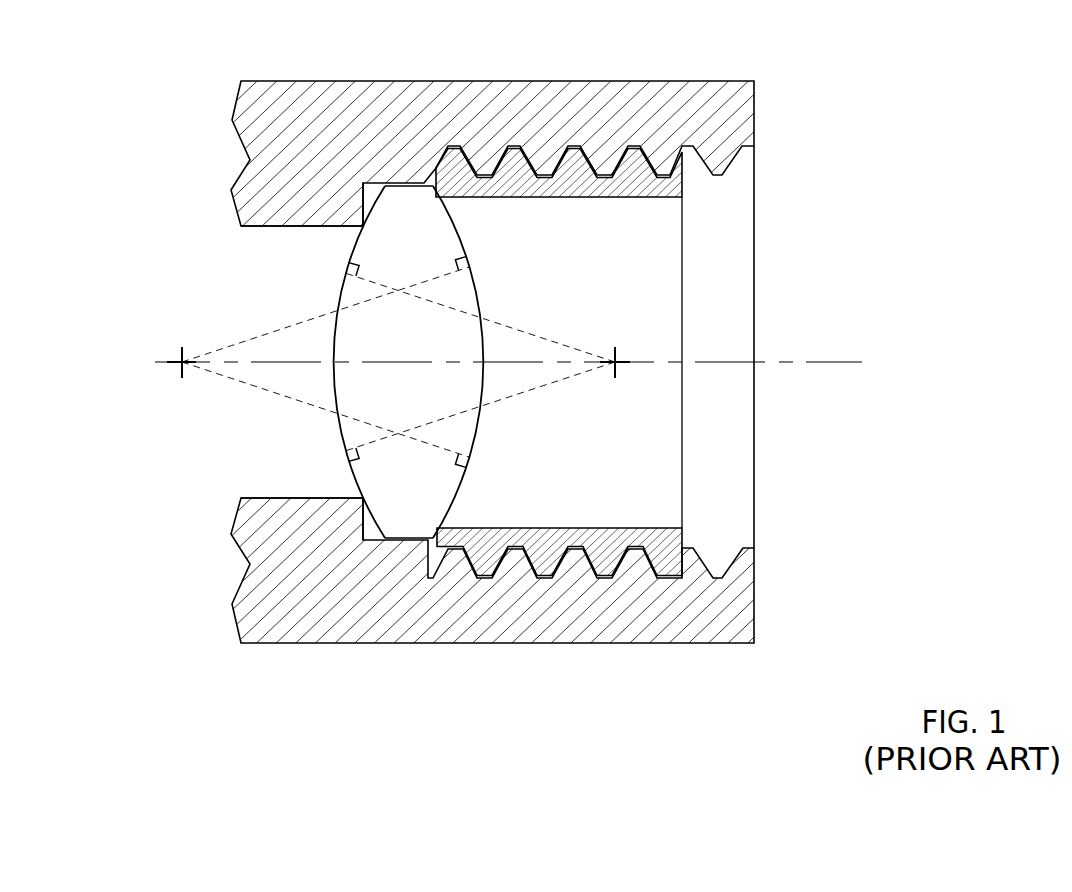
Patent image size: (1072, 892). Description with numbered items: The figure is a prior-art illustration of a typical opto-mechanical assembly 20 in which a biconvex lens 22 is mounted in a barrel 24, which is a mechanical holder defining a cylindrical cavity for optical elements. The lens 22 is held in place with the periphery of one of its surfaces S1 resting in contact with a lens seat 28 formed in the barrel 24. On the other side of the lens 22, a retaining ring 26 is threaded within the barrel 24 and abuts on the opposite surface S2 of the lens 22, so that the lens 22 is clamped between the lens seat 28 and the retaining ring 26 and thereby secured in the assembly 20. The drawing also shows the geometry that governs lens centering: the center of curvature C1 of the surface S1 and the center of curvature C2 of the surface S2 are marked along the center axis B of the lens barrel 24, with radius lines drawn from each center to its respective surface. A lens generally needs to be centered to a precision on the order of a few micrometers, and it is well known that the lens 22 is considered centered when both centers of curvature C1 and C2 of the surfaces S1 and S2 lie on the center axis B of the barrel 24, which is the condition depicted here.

The assembly 20 is at (888, 97).
The lens 22 is at (398, 362).
The barrel 24 is at (607, 81).
The retaining ring 26 is at (643, 197).
The lens seat 28 is at (316, 227).
The surface S1 is at (340, 430).
The surface S2 is at (478, 292).
The center of curvature C1 is at (501, 362).
The center of curvature C2 is at (308, 362).
The center axis B is at (832, 360).